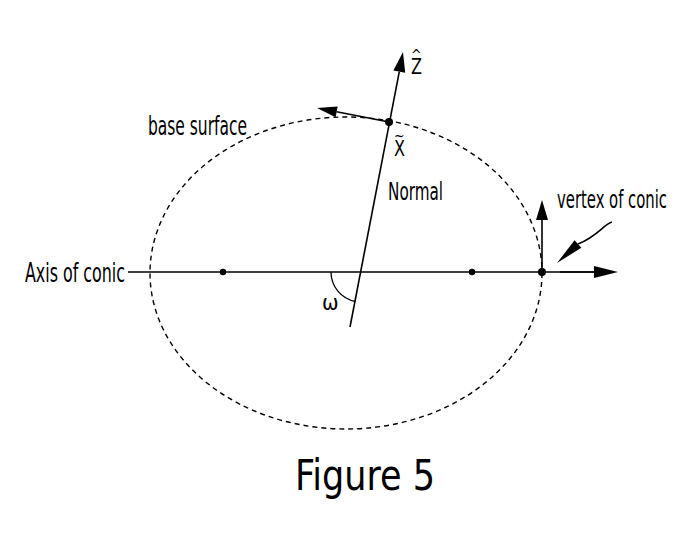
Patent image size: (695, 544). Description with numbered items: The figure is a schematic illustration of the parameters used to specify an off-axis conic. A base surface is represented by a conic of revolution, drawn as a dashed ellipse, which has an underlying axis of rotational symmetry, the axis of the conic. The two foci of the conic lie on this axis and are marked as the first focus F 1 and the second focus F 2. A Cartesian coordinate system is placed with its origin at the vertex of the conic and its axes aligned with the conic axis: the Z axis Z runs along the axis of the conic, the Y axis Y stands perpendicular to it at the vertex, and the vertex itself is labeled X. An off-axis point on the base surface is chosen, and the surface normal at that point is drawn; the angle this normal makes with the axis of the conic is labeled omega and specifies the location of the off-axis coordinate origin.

The first focus F1 of the conic 1 is at (225, 291).
The second focus F2 of the conic 2 is at (471, 293).
The vertex of conic (origin X) X is at (533, 258).
The Y axis at vertex Y is at (542, 218).
The Z axis along axis of conic Z is at (596, 273).